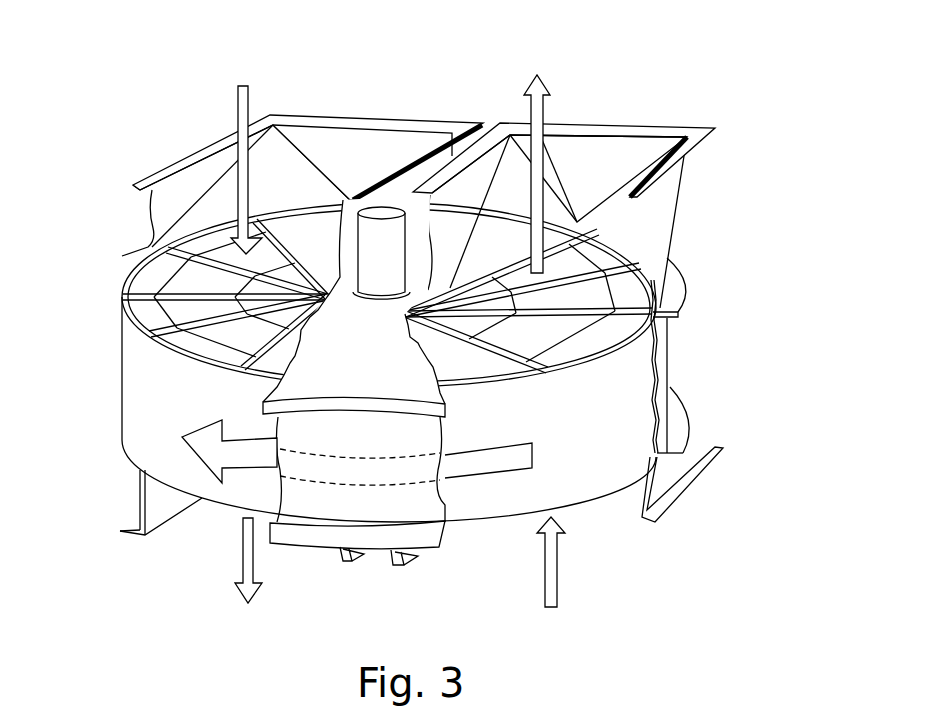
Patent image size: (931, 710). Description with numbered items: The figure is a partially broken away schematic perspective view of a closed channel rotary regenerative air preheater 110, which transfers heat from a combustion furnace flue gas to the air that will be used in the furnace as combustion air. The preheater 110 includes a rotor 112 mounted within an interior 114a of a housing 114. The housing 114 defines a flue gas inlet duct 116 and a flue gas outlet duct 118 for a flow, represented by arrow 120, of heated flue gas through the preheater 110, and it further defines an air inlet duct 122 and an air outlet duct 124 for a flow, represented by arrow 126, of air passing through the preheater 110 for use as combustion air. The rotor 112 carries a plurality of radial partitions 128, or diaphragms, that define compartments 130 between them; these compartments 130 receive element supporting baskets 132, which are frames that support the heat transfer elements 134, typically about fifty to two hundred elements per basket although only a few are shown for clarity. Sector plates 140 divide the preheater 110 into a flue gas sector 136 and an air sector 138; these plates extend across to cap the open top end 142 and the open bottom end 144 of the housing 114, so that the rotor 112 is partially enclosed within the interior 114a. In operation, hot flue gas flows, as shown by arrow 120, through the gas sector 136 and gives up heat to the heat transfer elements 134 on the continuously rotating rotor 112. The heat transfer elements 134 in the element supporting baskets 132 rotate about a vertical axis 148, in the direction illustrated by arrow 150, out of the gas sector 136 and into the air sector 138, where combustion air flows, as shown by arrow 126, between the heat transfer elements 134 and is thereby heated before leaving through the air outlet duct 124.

The closed channel rotary regenerative air preheater 110 is at (725, 270).
The rotor 112 is at (633, 355).
The housing 114 is at (668, 373).
The interior 114a is at (657, 410).
The flue gas inlet duct 116 is at (302, 146).
The flue gas outlet duct 118 is at (157, 498).
The arrow 120 is at (238, 100).
The air inlet duct 122 is at (637, 498).
The air outlet duct 124 is at (579, 173).
The arrow 126 is at (545, 110).
The radial partitions 128 is at (173, 337).
The compartments 130 is at (200, 347).
The element supporting baskets 132 is at (173, 310).
The heat transfer elements 134 is at (153, 277).
The flue gas sector 136 is at (371, 112).
The air sector 138 is at (700, 112).
The sector plates 140 is at (393, 372).
The open top end 142 is at (217, 370).
The open bottom end 144 is at (210, 495).
The vertical axis 148 is at (405, 262).
The arrow 150 is at (229, 451).